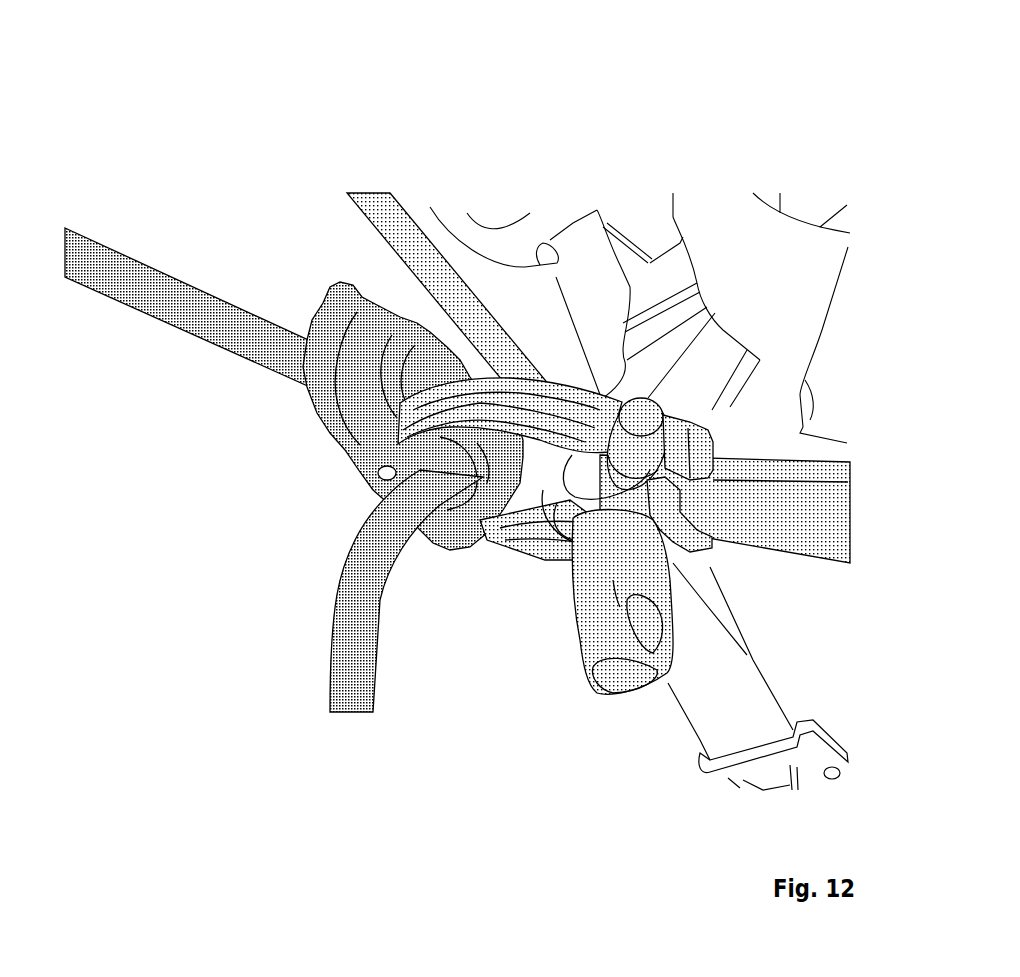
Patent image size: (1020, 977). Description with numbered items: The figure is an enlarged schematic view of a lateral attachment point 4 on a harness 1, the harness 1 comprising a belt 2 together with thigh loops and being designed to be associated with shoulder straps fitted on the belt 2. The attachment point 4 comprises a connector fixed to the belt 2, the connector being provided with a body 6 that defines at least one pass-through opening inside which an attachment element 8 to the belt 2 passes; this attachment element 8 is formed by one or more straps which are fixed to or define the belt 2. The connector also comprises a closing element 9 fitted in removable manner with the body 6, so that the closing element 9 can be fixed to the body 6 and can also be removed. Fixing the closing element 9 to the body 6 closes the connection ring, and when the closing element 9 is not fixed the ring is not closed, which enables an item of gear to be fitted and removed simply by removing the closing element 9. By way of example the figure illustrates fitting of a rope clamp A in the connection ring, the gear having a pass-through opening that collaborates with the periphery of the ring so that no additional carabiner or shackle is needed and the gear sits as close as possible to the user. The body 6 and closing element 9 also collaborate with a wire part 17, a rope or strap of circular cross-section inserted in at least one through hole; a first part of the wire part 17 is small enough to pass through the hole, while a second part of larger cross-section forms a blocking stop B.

The harness 1 is at (465, 170).
The belt 2 is at (770, 215).
The attachment point 4 is at (205, 625).
The body 6 is at (558, 388).
The attachment element 8 is at (757, 540).
The closing element 9 is at (548, 522).
The wire part 17 is at (168, 277).
The rope clamp A is at (337, 455).
The blocking stop B is at (580, 643).